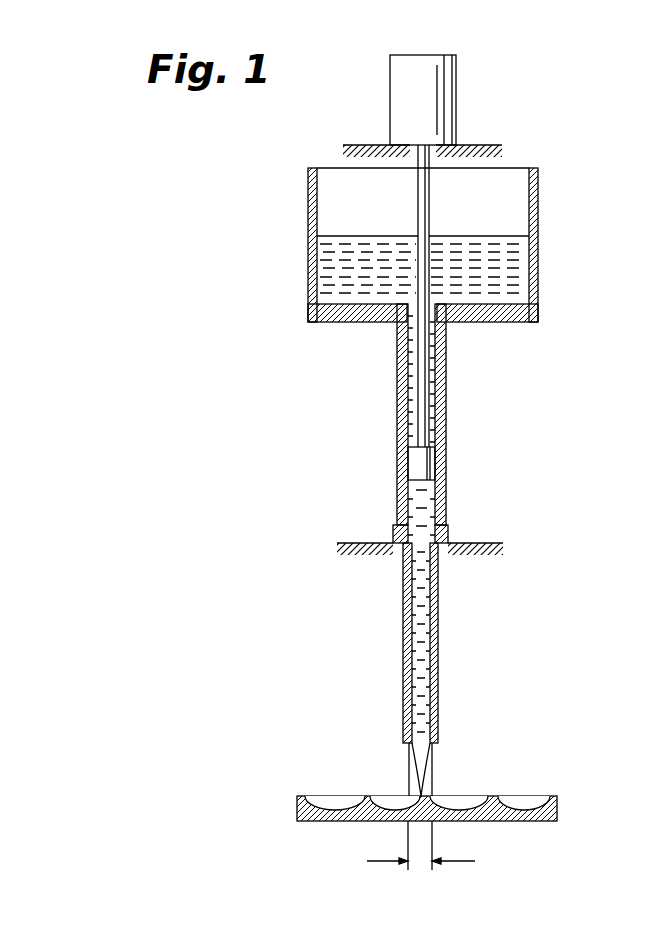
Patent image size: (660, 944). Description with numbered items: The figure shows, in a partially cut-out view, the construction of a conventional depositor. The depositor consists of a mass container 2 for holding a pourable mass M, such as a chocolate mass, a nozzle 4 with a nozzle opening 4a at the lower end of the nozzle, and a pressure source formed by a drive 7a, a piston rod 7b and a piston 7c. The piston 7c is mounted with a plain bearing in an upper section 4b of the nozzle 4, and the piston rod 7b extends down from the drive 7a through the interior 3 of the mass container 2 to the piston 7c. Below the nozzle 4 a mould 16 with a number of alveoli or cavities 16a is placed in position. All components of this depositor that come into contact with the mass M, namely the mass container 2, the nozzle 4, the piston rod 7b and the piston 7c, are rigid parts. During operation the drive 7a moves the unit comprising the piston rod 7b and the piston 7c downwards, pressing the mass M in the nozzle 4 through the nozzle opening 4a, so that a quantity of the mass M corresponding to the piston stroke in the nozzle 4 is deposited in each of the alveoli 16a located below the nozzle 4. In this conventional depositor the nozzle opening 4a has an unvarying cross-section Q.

The mass container 2 is at (538, 222).
The interior of the mass container 3 is at (335, 195).
The pourable mass M is at (343, 270).
The nozzle 4 is at (442, 677).
The nozzle opening 4a is at (420, 740).
The upper section of the nozzle 4b is at (397, 405).
The drive 7a is at (430, 110).
The piston rod 7b is at (418, 212).
The piston 7c is at (422, 465).
The mould 16 is at (437, 808).
The alveoli 16a is at (463, 796).
The cross-section Q is at (421, 858).